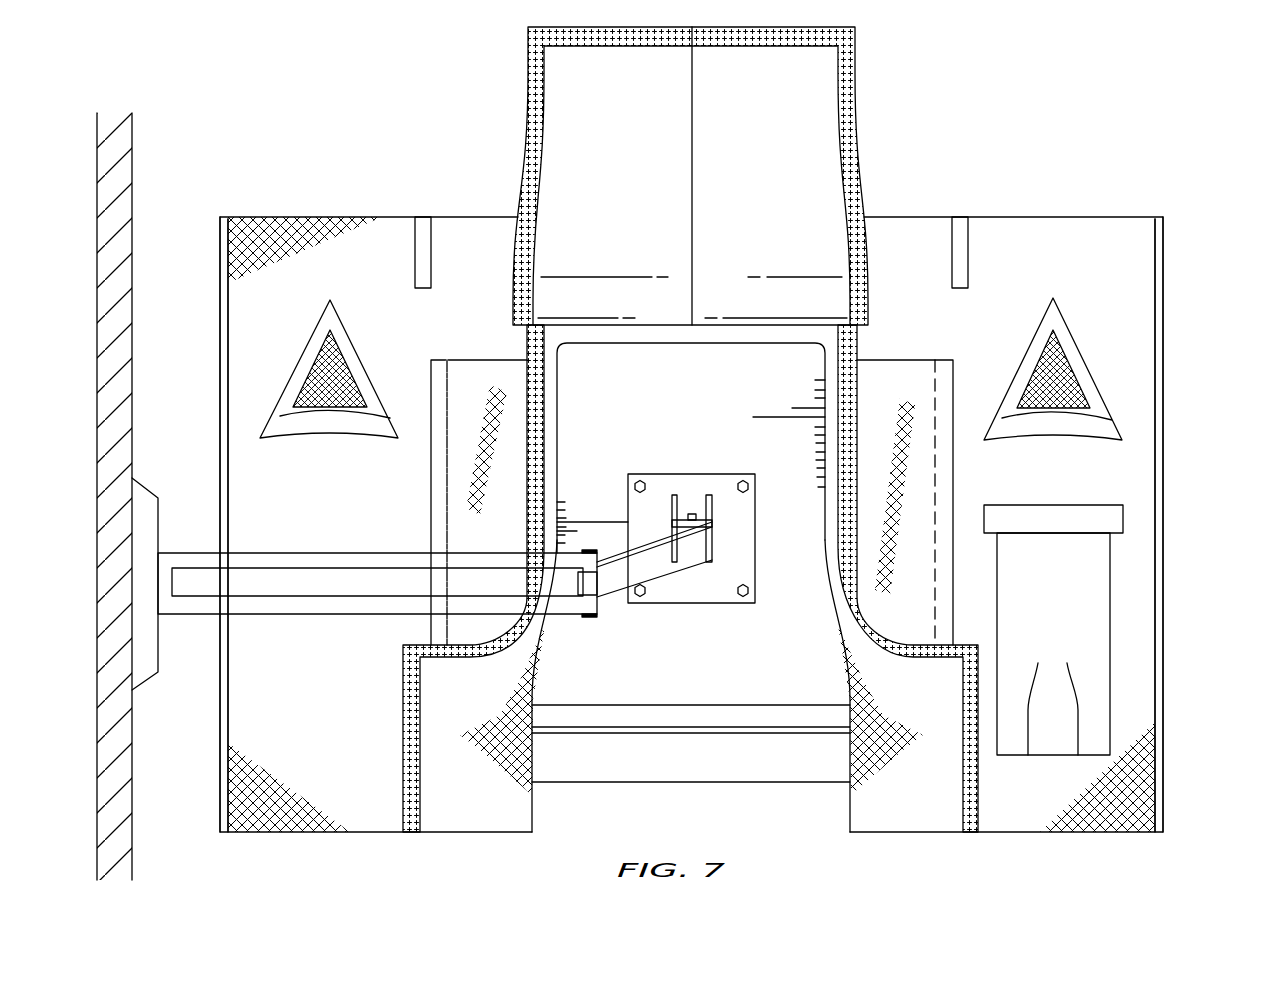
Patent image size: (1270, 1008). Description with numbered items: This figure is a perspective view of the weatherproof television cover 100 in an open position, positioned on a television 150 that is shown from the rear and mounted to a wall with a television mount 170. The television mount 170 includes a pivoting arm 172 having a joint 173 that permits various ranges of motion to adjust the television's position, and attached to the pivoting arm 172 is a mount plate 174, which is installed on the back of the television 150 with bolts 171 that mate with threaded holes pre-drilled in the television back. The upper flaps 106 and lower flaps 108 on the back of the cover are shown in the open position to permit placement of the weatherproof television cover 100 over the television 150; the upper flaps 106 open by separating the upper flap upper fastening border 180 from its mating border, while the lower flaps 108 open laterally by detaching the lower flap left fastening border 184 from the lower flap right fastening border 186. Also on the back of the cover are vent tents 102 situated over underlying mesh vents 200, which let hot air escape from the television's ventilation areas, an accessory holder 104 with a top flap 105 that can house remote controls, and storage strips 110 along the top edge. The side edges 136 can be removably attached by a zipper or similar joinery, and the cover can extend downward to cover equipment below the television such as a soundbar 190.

The weatherproof television cover 100 is at (1013, 217).
The vent tent 102 is at (1065, 335).
The accessory holder 104 is at (1036, 636).
The top flap 105 is at (1060, 517).
The upper flaps 106 is at (692, 212).
The lower flaps 108 is at (450, 797).
The storage strips 110 is at (1010, 258).
The side edges 136 is at (1165, 462).
The television 150 is at (675, 408).
The television mount 170 is at (145, 688).
The bolts 171 is at (775, 632).
The pivoting arm 172 is at (645, 582).
The joint 173 is at (592, 617).
The mount plate 174 is at (705, 472).
The upper flap upper fastening border 180 is at (858, 101).
The lower flap left fastening border 184 is at (403, 735).
The lower flap right fastening border 186 is at (980, 775).
The soundbar 190 is at (675, 771).
The mesh vent 200 is at (1042, 352).